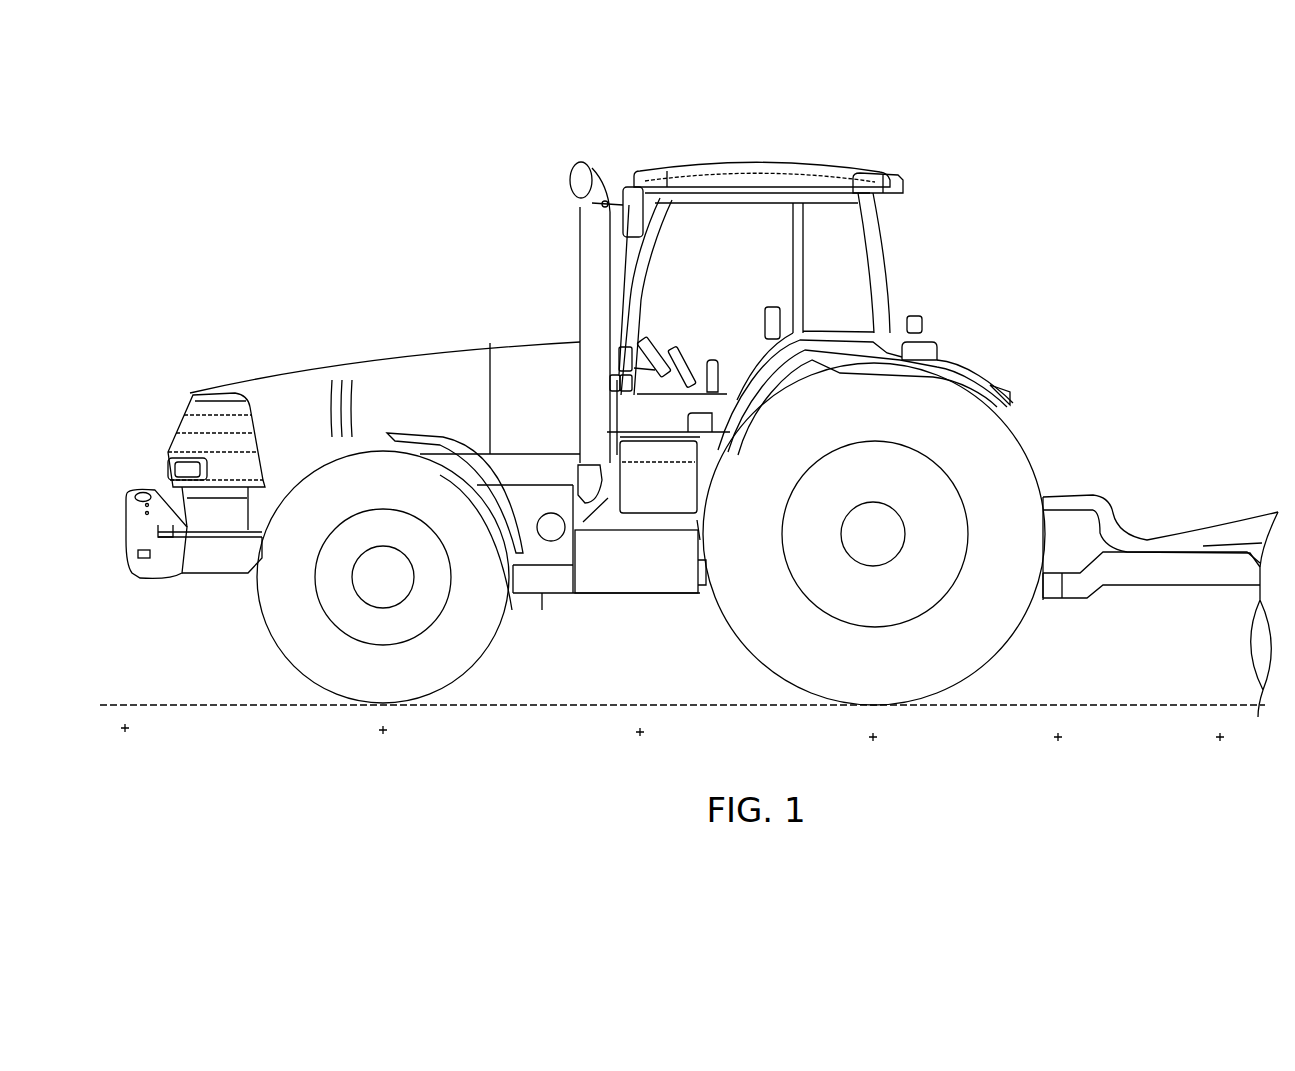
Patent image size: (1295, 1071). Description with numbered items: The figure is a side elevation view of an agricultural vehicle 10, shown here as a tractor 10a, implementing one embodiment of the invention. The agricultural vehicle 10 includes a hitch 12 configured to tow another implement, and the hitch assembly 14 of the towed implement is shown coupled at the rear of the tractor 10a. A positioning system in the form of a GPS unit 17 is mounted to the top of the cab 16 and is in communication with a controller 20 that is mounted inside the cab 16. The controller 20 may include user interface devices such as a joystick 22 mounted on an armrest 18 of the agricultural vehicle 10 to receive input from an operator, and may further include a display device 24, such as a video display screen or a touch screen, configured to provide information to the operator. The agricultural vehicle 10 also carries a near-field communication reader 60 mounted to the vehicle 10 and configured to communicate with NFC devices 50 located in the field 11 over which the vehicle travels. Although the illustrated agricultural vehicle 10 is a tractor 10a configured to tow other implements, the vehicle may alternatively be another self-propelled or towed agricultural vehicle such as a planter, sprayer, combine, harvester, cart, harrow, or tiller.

The agricultural vehicle 10 is at (768, 139).
The tractor 10a is at (820, 160).
The GPS unit 17 is at (884, 179).
The cab 16 is at (792, 253).
The controller 20 is at (695, 319).
The display device 24 is at (672, 345).
The joystick 22 is at (715, 357).
The armrest 18 is at (728, 385).
The hitch assembly 14 is at (1179, 511).
The hitch 12 is at (1038, 600).
The near-field communication (NFC) reader 60 is at (542, 605).
The NFC devices 50 is at (663, 772).
The field 11 is at (1071, 779).